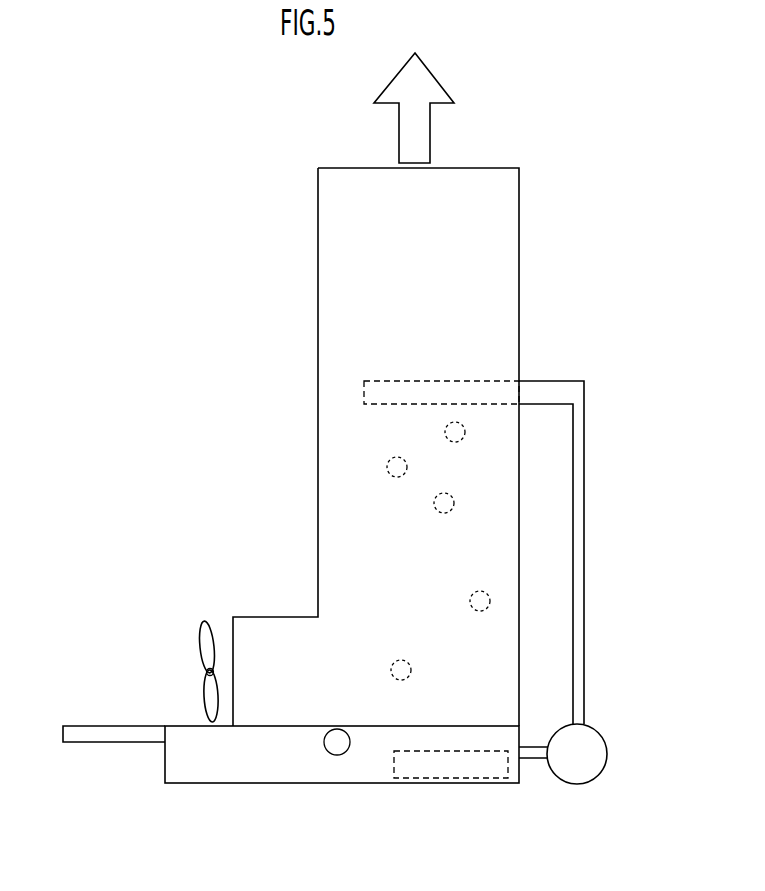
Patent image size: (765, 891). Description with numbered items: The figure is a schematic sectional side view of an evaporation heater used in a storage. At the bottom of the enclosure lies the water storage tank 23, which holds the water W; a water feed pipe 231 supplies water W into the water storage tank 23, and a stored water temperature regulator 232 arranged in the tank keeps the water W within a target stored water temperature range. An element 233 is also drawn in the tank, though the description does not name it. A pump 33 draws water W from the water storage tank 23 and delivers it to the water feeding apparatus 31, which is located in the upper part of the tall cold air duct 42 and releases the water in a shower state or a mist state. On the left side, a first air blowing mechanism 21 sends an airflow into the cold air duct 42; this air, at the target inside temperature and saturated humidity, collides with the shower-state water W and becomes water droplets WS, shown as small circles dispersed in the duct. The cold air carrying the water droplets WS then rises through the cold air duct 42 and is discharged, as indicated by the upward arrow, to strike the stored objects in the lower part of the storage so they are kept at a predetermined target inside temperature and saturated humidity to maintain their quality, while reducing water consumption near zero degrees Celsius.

The first air blowing mechanism 21 is at (197, 635).
The water storage tank 23 is at (220, 783).
The water feed pipe 231 is at (102, 725).
The stored water temperature regulator 232 is at (455, 783).
The inlet 233 is at (338, 755).
The water feeding apparatus 31 is at (364, 391).
The pump 33 is at (596, 728).
The cold air duct 42 is at (318, 540).
The water W is at (303, 763).
The water droplets WS is at (386, 468).